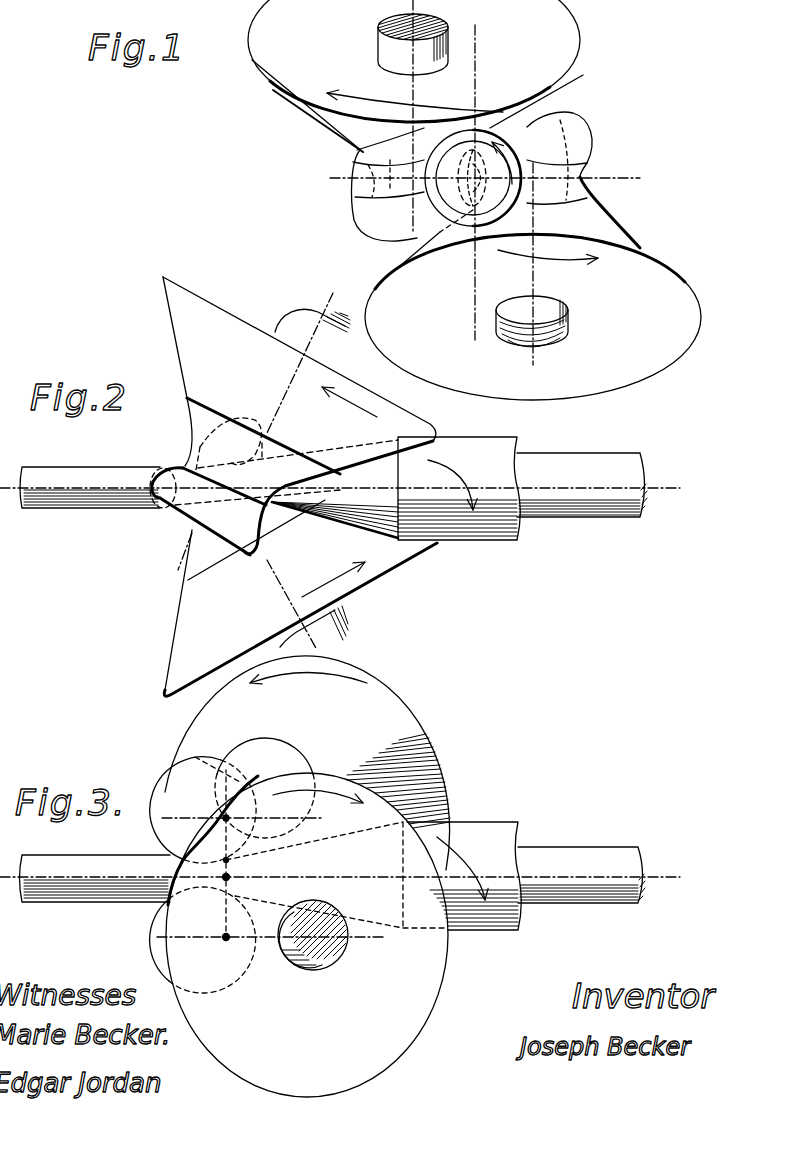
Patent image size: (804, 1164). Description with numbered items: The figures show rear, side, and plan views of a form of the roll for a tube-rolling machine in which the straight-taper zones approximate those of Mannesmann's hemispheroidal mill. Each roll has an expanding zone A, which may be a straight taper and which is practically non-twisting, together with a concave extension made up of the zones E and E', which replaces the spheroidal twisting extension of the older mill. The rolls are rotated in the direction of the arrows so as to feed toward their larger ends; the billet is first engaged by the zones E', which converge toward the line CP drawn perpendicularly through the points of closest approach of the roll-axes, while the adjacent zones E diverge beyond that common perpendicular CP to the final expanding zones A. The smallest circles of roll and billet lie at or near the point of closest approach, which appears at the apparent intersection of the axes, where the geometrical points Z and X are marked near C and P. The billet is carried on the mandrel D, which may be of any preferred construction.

In FIG. 1, the expanding zone A is at (358, 122).
In FIG. 2, the expanding zone A is at (253, 323).
In FIG. 3, the expanding zone A is at (320, 645).
In FIG. 1, the zone E is at (461, 184).
In FIG. 2, the zone E is at (208, 486).
In FIG. 3, the zone E is at (232, 865).
In FIG. 1, the zone E' is at (482, 172).
In FIG. 2, the zone E' is at (229, 488).
In FIG. 2, the mandrel D is at (560, 522).
In FIG. 3, the mandrel D is at (555, 852).
In FIG. 3, the point of line CP C is at (233, 876).
In FIG. 3, the point Z is at (304, 875).
In FIG. 3, the intersection point X is at (325, 901).
In FIG. 3, the point of line CP P is at (229, 949).